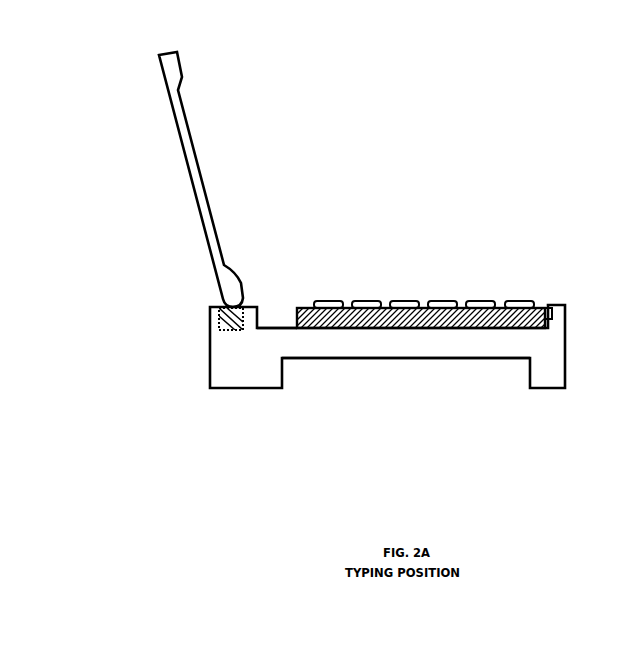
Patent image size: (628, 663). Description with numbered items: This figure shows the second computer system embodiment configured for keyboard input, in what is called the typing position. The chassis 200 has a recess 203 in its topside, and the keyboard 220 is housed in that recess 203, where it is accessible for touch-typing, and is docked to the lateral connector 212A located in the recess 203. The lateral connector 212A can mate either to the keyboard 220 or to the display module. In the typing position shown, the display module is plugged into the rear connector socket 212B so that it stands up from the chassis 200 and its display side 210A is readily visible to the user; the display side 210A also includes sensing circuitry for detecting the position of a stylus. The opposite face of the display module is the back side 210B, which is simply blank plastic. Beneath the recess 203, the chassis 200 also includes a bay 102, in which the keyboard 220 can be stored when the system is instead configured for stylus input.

The bay 102 is at (523, 368).
The chassis 200 is at (558, 380).
The recess 203 is at (277, 305).
The display side 210A is at (217, 213).
The back side 210B is at (206, 179).
The lateral connector 212A is at (555, 297).
The rear connector socket 212B is at (231, 332).
The keyboard 220 is at (443, 297).